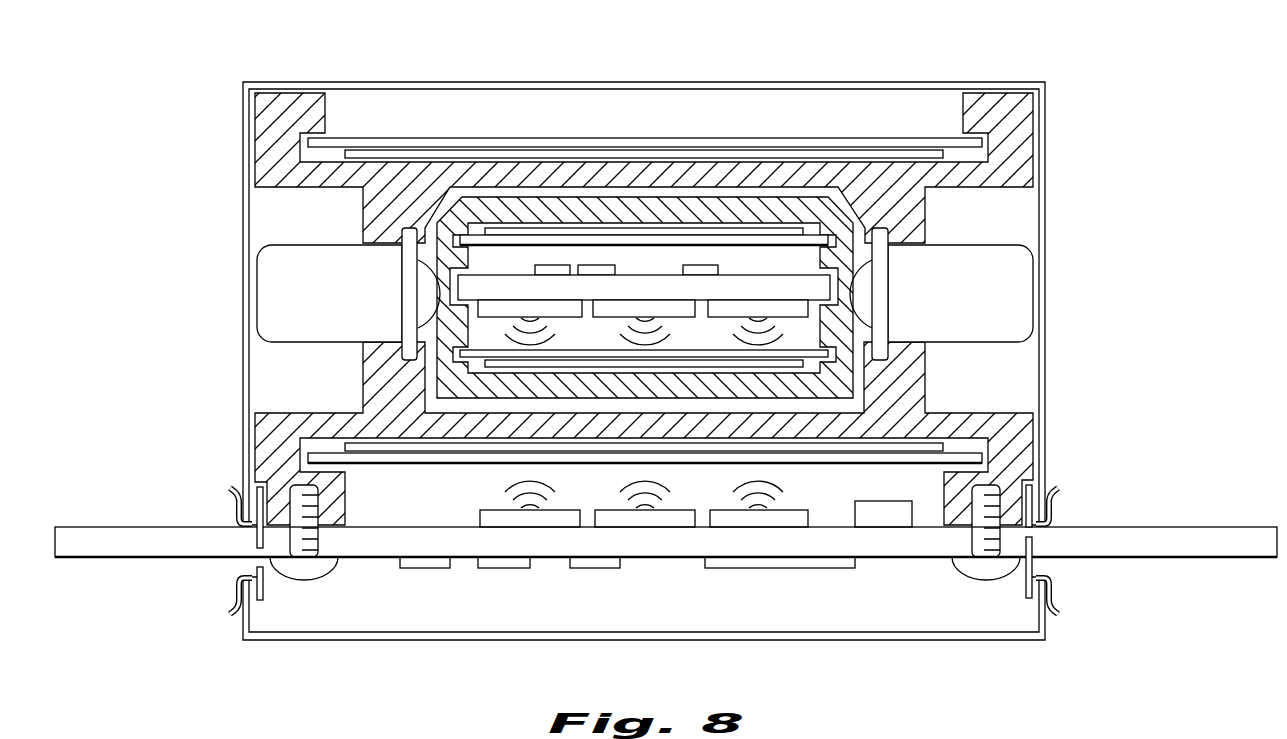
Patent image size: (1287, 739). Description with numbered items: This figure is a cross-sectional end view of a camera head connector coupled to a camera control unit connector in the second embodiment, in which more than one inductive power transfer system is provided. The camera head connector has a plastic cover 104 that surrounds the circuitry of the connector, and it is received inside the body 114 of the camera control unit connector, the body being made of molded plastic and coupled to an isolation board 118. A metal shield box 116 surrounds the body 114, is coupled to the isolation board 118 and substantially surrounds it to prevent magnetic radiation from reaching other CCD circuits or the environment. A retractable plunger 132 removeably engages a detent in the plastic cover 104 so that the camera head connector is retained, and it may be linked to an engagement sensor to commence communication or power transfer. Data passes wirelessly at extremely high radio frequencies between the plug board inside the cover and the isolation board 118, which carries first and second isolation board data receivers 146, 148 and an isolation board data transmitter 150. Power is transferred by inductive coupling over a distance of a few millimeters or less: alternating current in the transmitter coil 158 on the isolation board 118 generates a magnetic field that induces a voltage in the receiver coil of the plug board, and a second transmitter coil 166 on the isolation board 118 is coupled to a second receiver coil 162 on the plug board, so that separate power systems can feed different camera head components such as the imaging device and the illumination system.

The plastic cover 104 is at (725, 217).
The body 114 is at (1010, 138).
The shield box 116 is at (248, 375).
The isolation board 118 is at (1127, 527).
The retractable plunger 132 is at (290, 281).
The first isolation board data receiver 146 is at (497, 510).
The second isolation board data receiver 148 is at (662, 518).
The isolation board data transmitter 150 is at (800, 507).
The transmitter coil 158 is at (587, 145).
The second receiver coil 162 is at (587, 362).
The second transmitter coil 166 is at (928, 447).